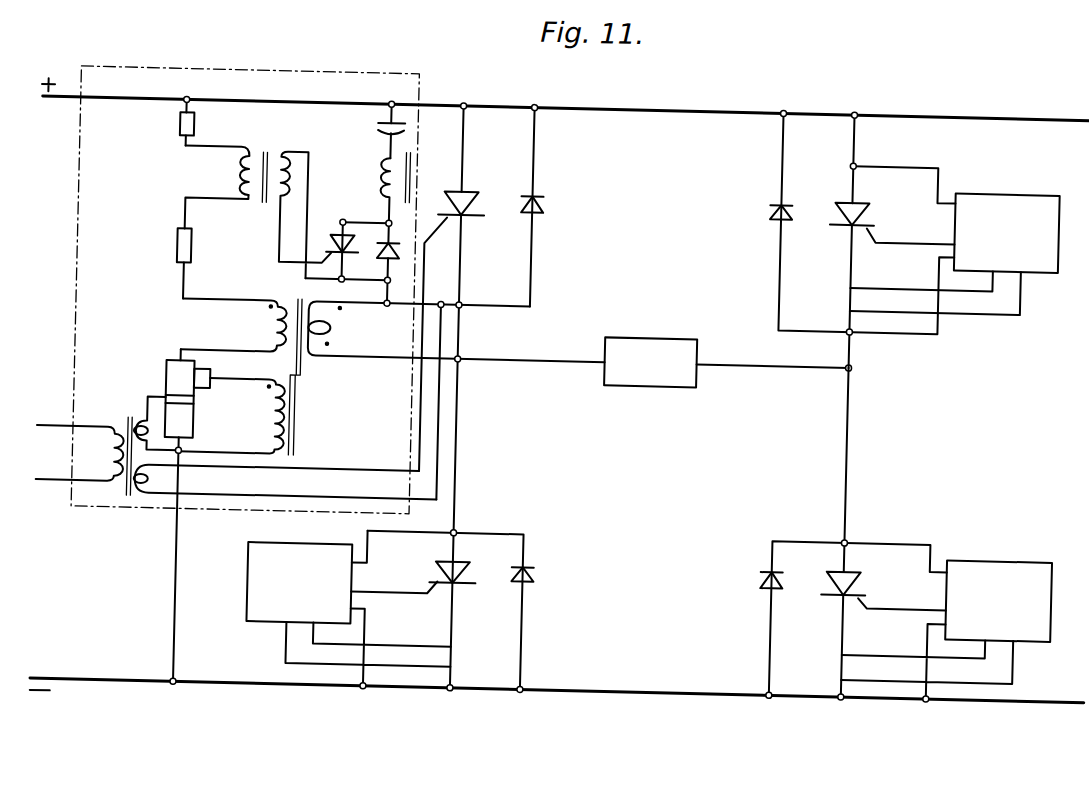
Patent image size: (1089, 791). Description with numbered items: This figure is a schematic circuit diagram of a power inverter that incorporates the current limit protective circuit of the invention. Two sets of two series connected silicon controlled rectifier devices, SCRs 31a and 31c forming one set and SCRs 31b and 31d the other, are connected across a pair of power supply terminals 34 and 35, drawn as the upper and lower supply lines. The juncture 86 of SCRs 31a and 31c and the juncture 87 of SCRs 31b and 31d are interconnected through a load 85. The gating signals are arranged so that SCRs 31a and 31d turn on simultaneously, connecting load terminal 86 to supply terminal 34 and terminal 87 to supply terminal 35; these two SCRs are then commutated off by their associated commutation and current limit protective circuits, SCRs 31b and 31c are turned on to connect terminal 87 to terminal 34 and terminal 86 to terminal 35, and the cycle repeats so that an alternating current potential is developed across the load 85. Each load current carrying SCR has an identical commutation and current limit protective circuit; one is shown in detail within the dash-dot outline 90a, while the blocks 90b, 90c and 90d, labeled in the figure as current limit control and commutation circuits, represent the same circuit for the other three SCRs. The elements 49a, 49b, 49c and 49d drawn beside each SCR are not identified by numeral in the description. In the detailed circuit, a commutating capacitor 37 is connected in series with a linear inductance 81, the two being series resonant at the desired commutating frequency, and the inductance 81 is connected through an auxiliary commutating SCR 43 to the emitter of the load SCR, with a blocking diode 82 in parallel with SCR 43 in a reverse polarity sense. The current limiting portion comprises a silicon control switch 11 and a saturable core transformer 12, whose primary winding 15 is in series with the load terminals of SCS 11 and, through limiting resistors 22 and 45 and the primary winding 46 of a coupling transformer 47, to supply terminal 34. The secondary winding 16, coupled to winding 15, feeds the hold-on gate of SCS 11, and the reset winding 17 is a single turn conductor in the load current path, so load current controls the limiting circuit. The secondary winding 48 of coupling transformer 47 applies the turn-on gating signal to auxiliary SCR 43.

The silicon control switch 11 is at (174, 368).
The saturable core transformer 12 is at (331, 401).
The primary winding 15 is at (278, 322).
The secondary winding 16 is at (277, 418).
The reset winding 17 is at (341, 323).
The limiting resistor 22 is at (184, 247).
The silicon controlled rectifier 31a is at (474, 210).
The silicon controlled rectifier 31b is at (868, 209).
The silicon controlled rectifier 31c is at (472, 558).
The silicon controlled rectifier 31d is at (869, 571).
The power supply terminal 34 is at (487, 103).
The power supply terminal 35 is at (245, 674).
The commutating capacitor 37 is at (382, 118).
The auxiliary commutating SCR 43 is at (345, 233).
The limiting resistor 45 is at (181, 121).
The primary winding 46 is at (249, 196).
The coupling transformer 47 is at (263, 149).
The secondary winding 48 is at (284, 157).
The diode 49a is at (549, 201).
The diode 49b is at (775, 206).
The diode 49c is at (548, 562).
The diode 49d is at (775, 569).
The linear inductance 81 is at (388, 166).
The blocking diode 82 is at (384, 247).
The load 85 is at (661, 323).
The juncture 86 is at (467, 347).
The juncture 87 is at (859, 347).
The current limit control and commutation circuit 90a is at (78, 164).
The current limit control and commutation circuit 90b is at (1026, 162).
The current limit control and commutation circuit 90c is at (261, 568).
The current limit control and commutation circuit 90d is at (1024, 528).